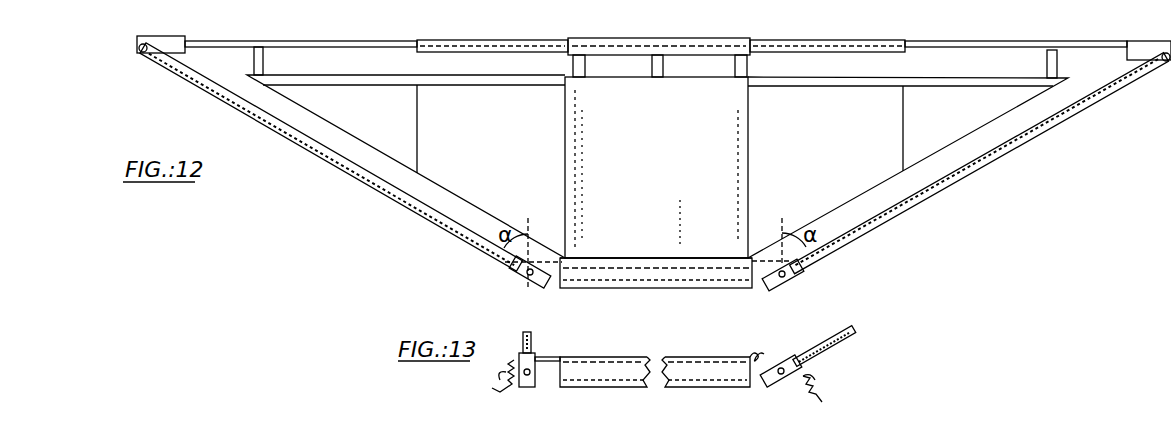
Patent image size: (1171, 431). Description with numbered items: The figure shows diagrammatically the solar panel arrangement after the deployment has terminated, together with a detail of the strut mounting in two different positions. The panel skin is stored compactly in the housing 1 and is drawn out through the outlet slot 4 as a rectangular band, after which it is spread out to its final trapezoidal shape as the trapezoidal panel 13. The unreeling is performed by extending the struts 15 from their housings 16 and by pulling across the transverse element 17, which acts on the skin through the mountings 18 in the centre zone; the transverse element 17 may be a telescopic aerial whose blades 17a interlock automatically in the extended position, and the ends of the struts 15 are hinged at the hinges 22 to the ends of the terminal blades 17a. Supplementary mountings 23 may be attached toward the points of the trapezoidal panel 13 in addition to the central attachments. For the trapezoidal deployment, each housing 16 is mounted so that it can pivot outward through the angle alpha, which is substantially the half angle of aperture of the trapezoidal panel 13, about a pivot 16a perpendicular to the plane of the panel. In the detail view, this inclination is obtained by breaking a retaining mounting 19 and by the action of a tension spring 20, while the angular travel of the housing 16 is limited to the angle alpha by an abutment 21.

In FIG. 12, the housing 1 is at (705, 272).
In FIG. 13, the housing 1 is at (616, 365).
In FIG. 12, the outlet slot 4 is at (600, 258).
In FIG. 12, the trapezoidal panel 13 is at (668, 172).
In FIG. 12, the struts 15 is at (322, 165).
In FIG. 13, the struts 15 is at (531, 345).
In FIG. 12, the housing for the struts 16 is at (512, 267).
In FIG. 13, the housing for the struts 16 is at (527, 388).
In FIG. 12, the pivot 16a is at (532, 282).
In FIG. 13, the pivot 16a is at (536, 375).
In FIG. 12, the transverse element 17 is at (705, 50).
In FIG. 12, the blades 17a is at (417, 42).
In FIG. 12, the mountings 18 is at (579, 68).
In FIG. 13, the mounting 19 is at (554, 357).
In FIG. 13, the tension spring 20 is at (509, 390).
In FIG. 13, the abutment 21 is at (506, 375).
In FIG. 12, the hinge 22 is at (143, 53).
In FIG. 12, the supplementary mountings 23 is at (254, 58).